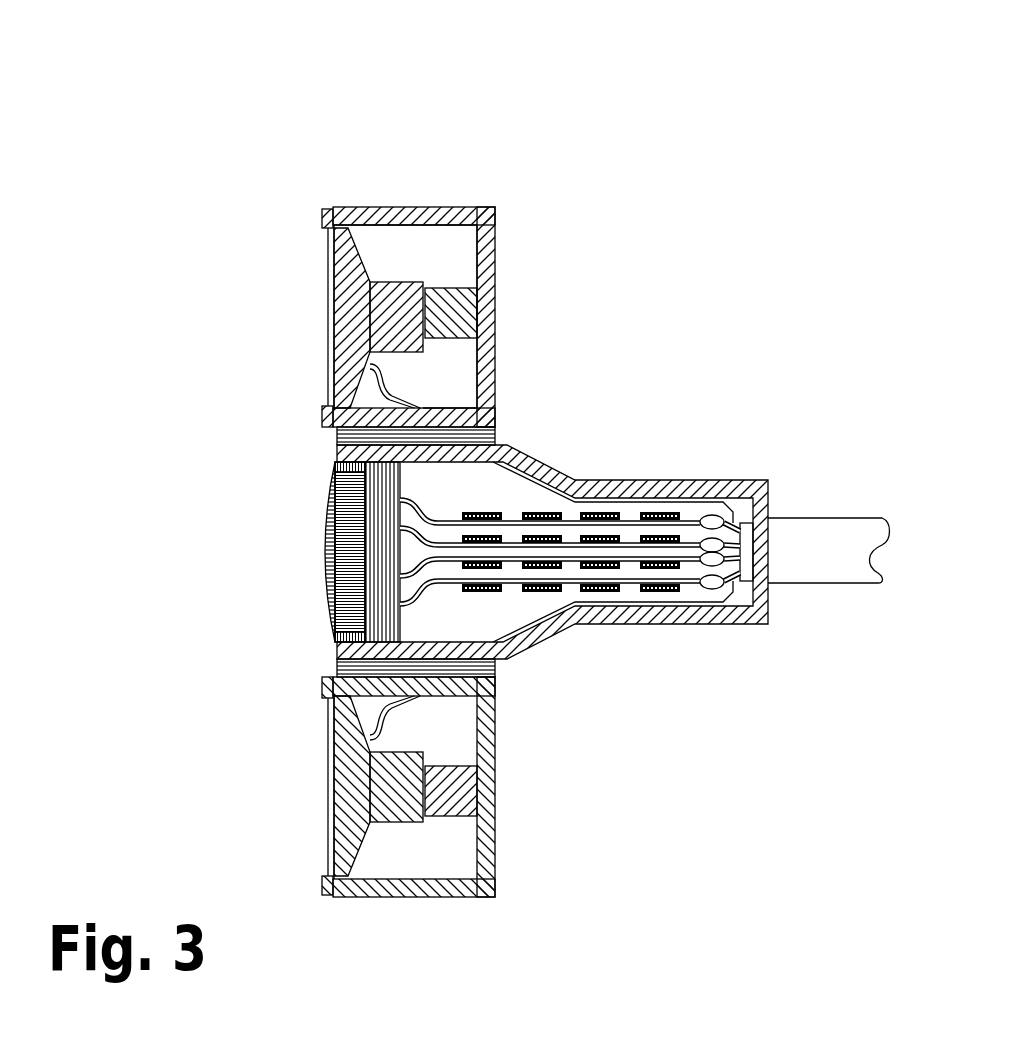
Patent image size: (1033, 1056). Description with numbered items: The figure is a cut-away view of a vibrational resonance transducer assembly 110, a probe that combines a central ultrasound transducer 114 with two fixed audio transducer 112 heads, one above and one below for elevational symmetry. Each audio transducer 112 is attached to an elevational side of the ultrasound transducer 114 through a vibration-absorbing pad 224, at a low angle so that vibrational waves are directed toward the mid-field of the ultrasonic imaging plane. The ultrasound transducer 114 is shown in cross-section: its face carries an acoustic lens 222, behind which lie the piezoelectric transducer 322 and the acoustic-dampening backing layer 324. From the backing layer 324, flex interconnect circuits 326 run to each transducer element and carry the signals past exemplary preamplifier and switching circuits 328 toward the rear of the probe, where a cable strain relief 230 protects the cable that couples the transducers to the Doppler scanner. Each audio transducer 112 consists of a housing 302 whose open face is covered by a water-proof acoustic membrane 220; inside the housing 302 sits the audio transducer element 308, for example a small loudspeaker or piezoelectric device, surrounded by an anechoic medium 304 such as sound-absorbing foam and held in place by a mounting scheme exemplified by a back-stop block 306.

The vibrational resonance transducer assembly 110 is at (324, 148).
The audio transducer 112 is at (434, 512).
The ultrasound transducer 114 is at (464, 584).
The water-proof acoustic membrane 220 is at (331, 337).
The acoustic lens 222 is at (329, 490).
The vibration-absorbing pad 224 is at (342, 436).
The cable strain relief 230 is at (760, 493).
The housing 302 is at (447, 207).
The anechoic medium 304 is at (467, 253).
The back-stop block 306 is at (460, 287).
The audio transducer element 308 is at (425, 343).
The piezoelectric transducer 322 is at (333, 551).
The acoustic-dampening backing layer 324 is at (367, 620).
The flex interconnect circuits 326 is at (427, 595).
The preamplifier and switching circuits 328 is at (633, 590).